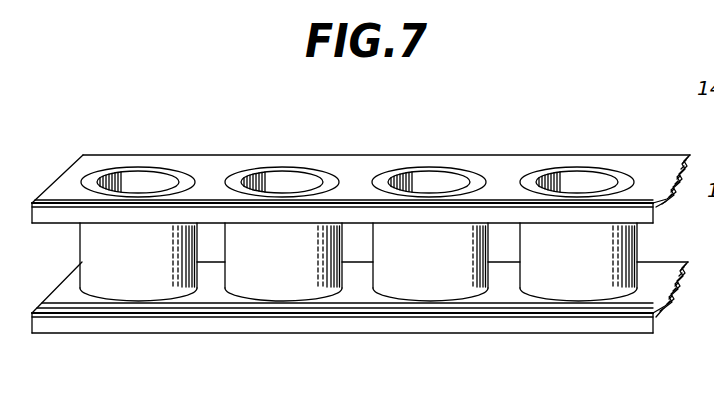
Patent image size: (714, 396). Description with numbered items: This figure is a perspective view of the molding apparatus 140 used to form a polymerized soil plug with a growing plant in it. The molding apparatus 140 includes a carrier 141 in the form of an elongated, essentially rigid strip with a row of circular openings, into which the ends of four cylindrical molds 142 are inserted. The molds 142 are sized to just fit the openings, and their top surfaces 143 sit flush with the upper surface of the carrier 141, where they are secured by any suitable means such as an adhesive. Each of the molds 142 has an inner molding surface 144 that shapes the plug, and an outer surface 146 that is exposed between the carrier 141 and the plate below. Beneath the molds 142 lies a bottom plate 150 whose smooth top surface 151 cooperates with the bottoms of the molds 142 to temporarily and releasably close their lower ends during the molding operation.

The molding apparatus 140 is at (90, 103).
The carrier 141 is at (210, 165).
The molds 142 is at (255, 285).
The top surfaces 143 is at (103, 175).
The inner molding surface 144 is at (155, 183).
The outer surface 146 is at (100, 252).
The bottom plate 150 is at (383, 338).
The top surface 151 is at (602, 313).